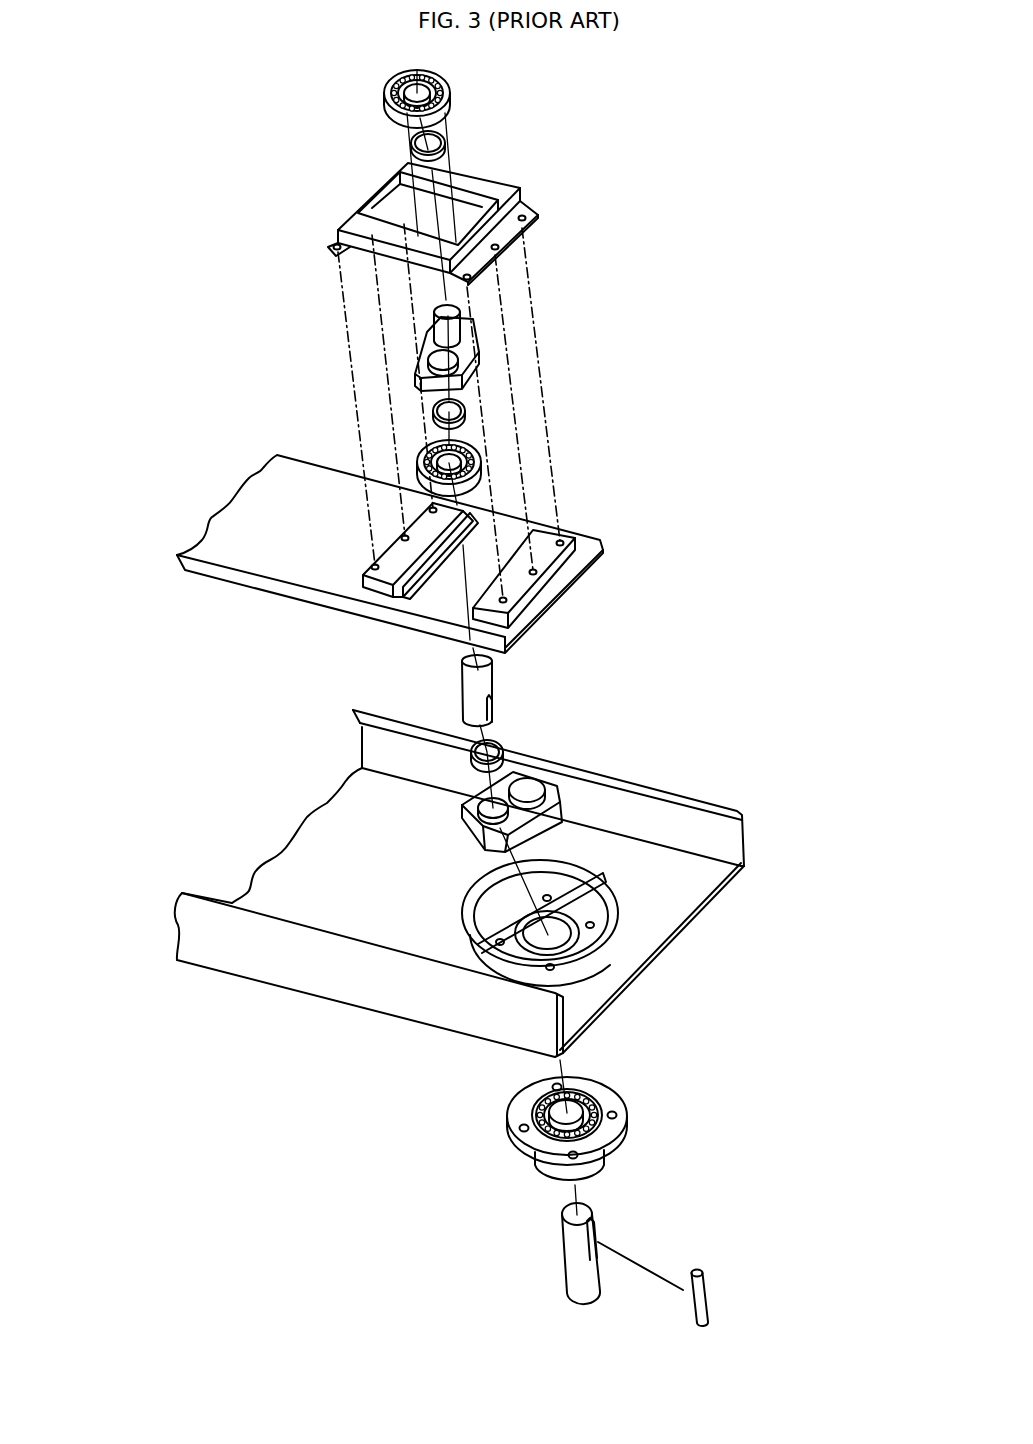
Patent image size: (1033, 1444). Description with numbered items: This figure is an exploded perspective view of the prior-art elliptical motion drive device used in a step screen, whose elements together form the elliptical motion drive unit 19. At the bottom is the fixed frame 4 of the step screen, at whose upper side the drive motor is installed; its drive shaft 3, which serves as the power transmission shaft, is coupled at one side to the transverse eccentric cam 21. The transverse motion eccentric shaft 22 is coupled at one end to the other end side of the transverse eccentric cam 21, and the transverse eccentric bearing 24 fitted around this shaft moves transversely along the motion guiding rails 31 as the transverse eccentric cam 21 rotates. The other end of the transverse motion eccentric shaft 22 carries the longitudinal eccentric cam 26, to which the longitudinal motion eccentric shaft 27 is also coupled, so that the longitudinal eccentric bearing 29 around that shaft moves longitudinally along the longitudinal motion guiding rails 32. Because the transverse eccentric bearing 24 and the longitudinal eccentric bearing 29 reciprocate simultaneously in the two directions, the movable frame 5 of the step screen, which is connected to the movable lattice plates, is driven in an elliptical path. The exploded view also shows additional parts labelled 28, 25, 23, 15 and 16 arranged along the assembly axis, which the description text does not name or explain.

The longitudinal eccentric bearing 29 is at (452, 112).
The spacer ring 28 is at (450, 158).
The longitudinal motion guiding rails 32 is at (403, 221).
The elliptical motion drive unit 19 is at (179, 334).
The longitudinal motion eccentric shaft 27 is at (455, 330).
The longitudinal eccentric cam 26 is at (455, 366).
The ring 25 is at (440, 426).
The transverse eccentric bearing 24 is at (488, 480).
The motion guiding rails 31 is at (513, 512).
The movable frame 5 is at (258, 586).
The transverse motion eccentric shaft 22 is at (497, 691).
The ring 23 is at (507, 741).
The transverse eccentric cam 21 is at (553, 788).
The fixed frame 4 is at (280, 973).
The bearing flange 15 is at (627, 1127).
The drive shaft 3 is at (570, 1255).
The pin 16 is at (703, 1290).